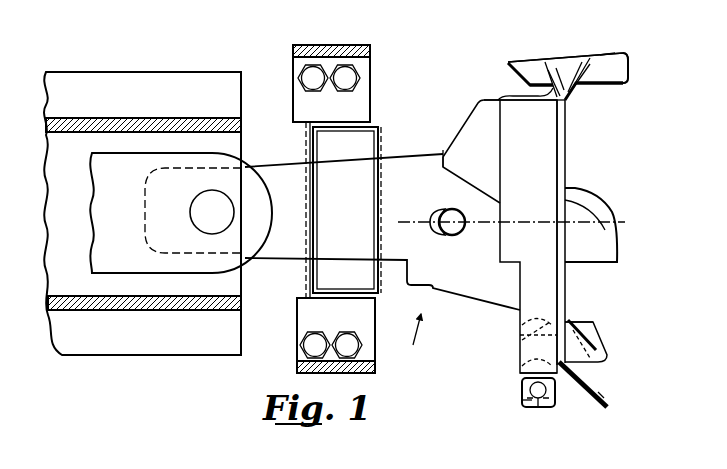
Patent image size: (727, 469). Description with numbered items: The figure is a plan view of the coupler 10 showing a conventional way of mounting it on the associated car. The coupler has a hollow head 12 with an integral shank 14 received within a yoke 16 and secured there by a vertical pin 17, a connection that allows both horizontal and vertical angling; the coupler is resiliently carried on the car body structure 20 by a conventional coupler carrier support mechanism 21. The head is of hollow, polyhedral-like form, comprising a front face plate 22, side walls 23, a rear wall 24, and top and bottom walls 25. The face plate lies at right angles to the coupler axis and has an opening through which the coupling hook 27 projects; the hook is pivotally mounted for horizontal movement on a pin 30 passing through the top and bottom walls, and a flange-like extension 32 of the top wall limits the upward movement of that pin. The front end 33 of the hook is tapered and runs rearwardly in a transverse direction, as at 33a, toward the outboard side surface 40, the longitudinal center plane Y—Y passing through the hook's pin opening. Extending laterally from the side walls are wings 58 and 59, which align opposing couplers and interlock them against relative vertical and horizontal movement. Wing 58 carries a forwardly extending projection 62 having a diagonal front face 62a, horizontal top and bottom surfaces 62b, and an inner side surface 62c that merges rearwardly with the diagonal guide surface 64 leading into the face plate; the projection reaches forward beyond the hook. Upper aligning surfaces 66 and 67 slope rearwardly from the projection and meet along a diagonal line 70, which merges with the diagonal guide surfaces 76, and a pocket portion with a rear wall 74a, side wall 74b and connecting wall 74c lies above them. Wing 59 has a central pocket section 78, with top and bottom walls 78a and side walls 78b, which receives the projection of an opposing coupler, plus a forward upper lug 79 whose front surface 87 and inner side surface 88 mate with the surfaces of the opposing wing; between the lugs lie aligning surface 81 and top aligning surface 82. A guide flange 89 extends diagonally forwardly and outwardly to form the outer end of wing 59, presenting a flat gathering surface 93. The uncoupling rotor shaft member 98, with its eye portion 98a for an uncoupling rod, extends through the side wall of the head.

The coupler 10 is at (417, 340).
The hollow head 12 is at (482, 95).
The shank 14 is at (392, 161).
The yoke 16 is at (251, 161).
The vertical pin 17 is at (222, 212).
The car body structure 20 is at (236, 350).
The coupler carrier support mechanism 21 is at (386, 130).
The front face plate 22 is at (560, 152).
The side walls 23 is at (476, 102).
The rear wall 24 is at (446, 151).
The top and bottom walls 25 is at (536, 171).
The coupling hook 27 is at (622, 245).
The pin 30 is at (454, 208).
The flange-like extension 32 is at (428, 226).
The front end of the hook 33 is at (640, 222).
The transverse rearward extension of hook front end 33a is at (608, 262).
The outboard side surface 40 is at (602, 264).
The wing 58 is at (546, 68).
The wing 59 is at (518, 358).
The forwardly extending projection 62 is at (600, 56).
The front face of projection 62a is at (628, 65).
The top and bottom surfaces of projection 62b is at (620, 60).
The inner side surface of projection 62c is at (598, 84).
The diagonal guide surface 64 is at (566, 96).
The upper aligning surface 66 is at (572, 78).
The upper aligning surface 67 is at (556, 66).
The diagonal sloping line 70 is at (608, 50).
The vertical rear wall of pocket portion 74a is at (516, 70).
The vertical side wall of pocket portion 74b is at (500, 100).
The horizontal connecting wall of pocket portion 74c is at (532, 68).
The diagonal guide surfaces 76 is at (566, 75).
The pocket section 78 is at (522, 382).
The top and bottom pocket walls 78a is at (530, 348).
The side walls of pocket section 78b is at (520, 318).
The upper lug portion 79 is at (599, 346).
The aligning surface 81 is at (538, 334).
The top aligning surface 82 is at (592, 330).
The front surface of lug 87 is at (606, 340).
The inner side surface of lug 88 is at (584, 326).
The aligning or guide flange 89 is at (598, 405).
The aligning and gathering surface 93 is at (602, 394).
The uncoupling rotor shaft member 98 is at (520, 408).
The eye portion 98a is at (538, 398).